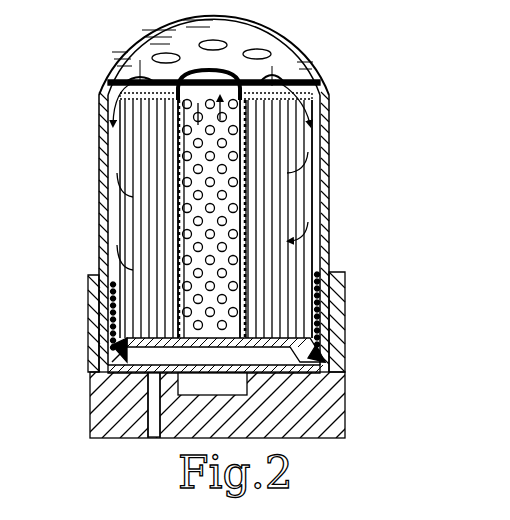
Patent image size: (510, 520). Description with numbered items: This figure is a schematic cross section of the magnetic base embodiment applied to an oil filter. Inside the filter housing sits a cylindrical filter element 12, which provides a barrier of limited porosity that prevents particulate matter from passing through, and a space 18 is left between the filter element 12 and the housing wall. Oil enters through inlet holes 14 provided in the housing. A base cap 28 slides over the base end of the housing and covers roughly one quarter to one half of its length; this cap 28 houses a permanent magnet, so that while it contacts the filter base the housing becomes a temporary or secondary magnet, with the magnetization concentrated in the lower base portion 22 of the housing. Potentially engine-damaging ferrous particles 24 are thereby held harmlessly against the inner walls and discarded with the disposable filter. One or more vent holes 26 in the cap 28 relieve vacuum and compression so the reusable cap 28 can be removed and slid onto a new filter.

The filter element 12 is at (289, 133).
The inlet holes 14 is at (255, 50).
The space 18 is at (312, 183).
The base portion 22 is at (70, 228).
The ferrous particles 24 is at (325, 272).
The vent holes 26 is at (152, 430).
The base cap 28 is at (338, 392).